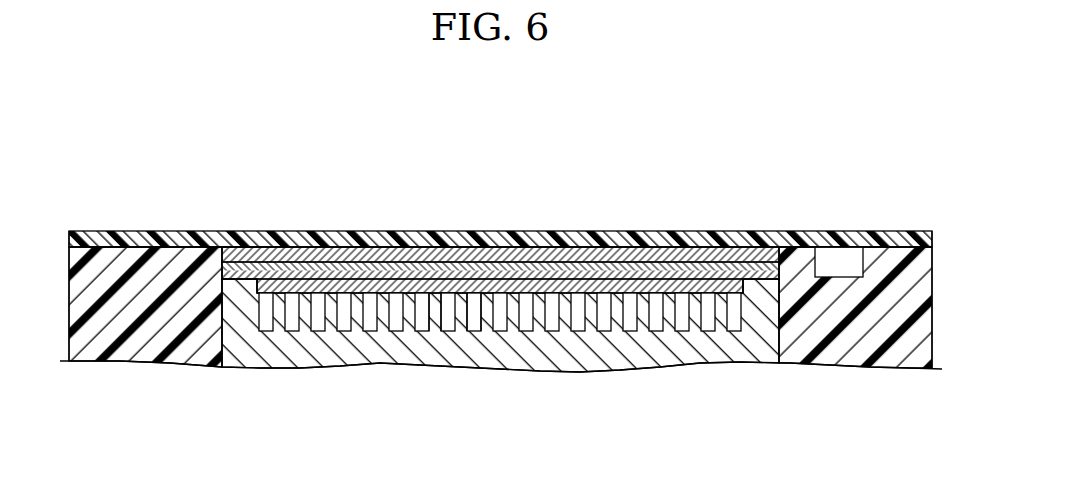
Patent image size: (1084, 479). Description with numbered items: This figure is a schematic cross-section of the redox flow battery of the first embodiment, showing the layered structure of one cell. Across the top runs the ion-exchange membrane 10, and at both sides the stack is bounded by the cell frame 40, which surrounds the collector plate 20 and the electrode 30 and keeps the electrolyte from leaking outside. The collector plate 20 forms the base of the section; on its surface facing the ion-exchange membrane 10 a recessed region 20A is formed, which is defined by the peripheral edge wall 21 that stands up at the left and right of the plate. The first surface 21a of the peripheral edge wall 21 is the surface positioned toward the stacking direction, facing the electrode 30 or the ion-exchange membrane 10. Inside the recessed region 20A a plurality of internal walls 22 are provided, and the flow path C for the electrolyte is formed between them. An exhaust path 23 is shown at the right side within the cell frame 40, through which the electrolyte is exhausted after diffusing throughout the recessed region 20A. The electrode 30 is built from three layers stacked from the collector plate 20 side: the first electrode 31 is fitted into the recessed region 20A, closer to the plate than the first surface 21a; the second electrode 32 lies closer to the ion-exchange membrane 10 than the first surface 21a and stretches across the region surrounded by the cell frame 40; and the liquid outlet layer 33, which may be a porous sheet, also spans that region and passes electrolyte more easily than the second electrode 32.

The ion-exchange membrane 10 is at (297, 238).
The collector plate 20 is at (241, 352).
The recessed region 20A is at (270, 312).
The peripheral edge wall 21 is at (247, 290).
The first surface 21a is at (238, 253).
The internal walls 22 is at (435, 308).
The exhaust path 23 is at (835, 255).
The electrode 30 is at (500, 200).
The first electrode 31 is at (393, 283).
The second electrode 32 is at (437, 263).
The liquid outlet layer 33 is at (362, 167).
The cell frame 40 is at (100, 353).
The flow path C is at (473, 320).